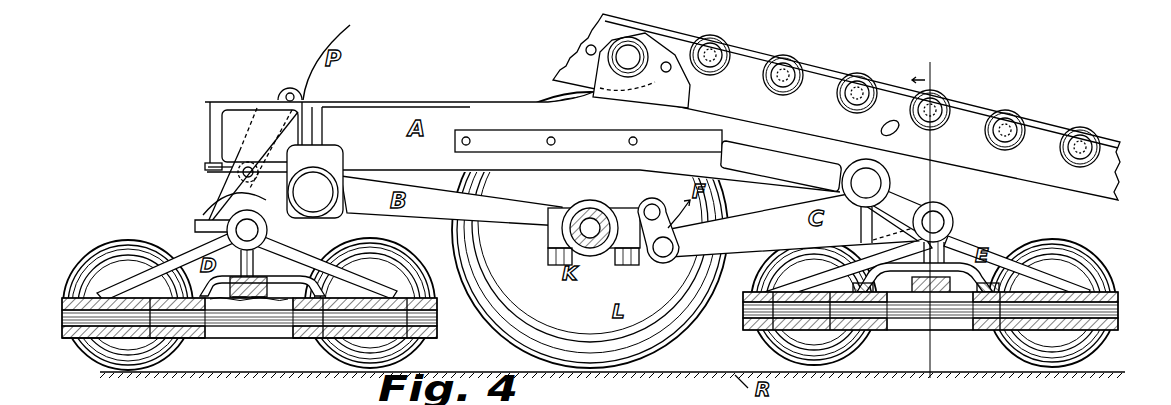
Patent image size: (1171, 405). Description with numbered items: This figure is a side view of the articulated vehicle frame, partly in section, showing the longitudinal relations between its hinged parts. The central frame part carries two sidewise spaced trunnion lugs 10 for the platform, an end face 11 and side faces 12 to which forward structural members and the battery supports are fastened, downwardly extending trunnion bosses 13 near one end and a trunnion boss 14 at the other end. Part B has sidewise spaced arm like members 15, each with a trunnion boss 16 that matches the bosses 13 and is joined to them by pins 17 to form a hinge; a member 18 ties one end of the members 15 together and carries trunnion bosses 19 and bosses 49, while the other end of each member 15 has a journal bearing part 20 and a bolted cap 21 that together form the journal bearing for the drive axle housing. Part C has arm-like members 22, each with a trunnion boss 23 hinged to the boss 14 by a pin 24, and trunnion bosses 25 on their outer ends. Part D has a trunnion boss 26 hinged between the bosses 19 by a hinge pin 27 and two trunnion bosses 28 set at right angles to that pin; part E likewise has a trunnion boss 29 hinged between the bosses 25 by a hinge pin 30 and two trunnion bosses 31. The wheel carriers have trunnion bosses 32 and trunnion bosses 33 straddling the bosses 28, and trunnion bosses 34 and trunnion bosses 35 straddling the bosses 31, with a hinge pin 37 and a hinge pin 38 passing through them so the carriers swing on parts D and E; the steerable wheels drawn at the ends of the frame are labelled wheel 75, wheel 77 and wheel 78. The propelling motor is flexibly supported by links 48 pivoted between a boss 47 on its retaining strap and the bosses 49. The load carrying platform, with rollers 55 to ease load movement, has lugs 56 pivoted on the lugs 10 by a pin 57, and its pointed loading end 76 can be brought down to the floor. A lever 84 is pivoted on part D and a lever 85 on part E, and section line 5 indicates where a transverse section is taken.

The section line 5- 5 is at (927, 217).
The trunnion lugs 10 is at (676, 82).
The end face 11 is at (205, 167).
The side faces 12 is at (543, 129).
The trunnion bosses 13 is at (343, 152).
The trunnion boss 14 is at (880, 160).
The arm like members 15 is at (451, 201).
The trunnion boss 16 is at (334, 194).
The pins 17 is at (313, 192).
The member 18 is at (216, 197).
The trunnion bosses 19 is at (200, 222).
The journal bearing part 20 is at (607, 206).
The cap 21 is at (604, 252).
The arm-like members 22 is at (786, 226).
The trunnion boss 23 is at (898, 215).
The pin 24 is at (866, 201).
The trunnion bosses 25 is at (948, 216).
The trunnion boss 26 is at (258, 266).
The hinge pin 27 is at (260, 226).
The trunnion bosses 28 is at (182, 340).
The trunnion boss 29 is at (954, 222).
The hinge pin 30 is at (940, 212).
The trunnion bosses 31 is at (860, 334).
The trunnion bosses 32 is at (74, 340).
The trunnion bosses 33 is at (304, 340).
The trunnion bosses 34 is at (760, 334).
The trunnion bosses 35 is at (936, 330).
The hinge pin 37 is at (62, 318).
The hinge pin 38 is at (1118, 303).
The boss 47 is at (282, 97).
The links 48 is at (260, 134).
The bosses 49 is at (210, 172).
The rollers 55 is at (842, 96).
The lugs 56 is at (714, 72).
The pin 57 is at (638, 70).
The wheel 75 is at (102, 256).
The end 76 is at (400, 262).
The wheel 77 is at (755, 280).
The wheel 78 is at (1065, 250).
The lever 84 is at (272, 335).
The lever 85 is at (926, 306).